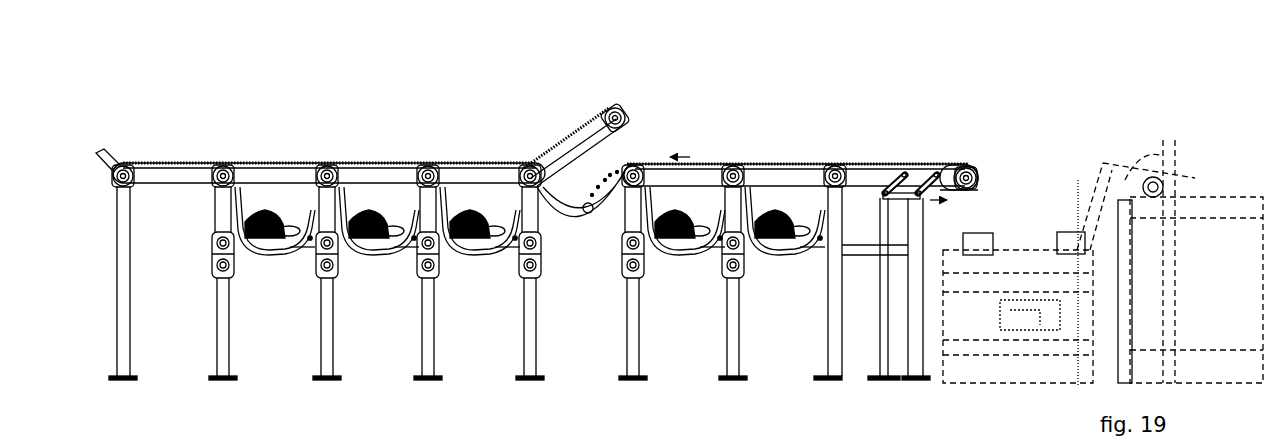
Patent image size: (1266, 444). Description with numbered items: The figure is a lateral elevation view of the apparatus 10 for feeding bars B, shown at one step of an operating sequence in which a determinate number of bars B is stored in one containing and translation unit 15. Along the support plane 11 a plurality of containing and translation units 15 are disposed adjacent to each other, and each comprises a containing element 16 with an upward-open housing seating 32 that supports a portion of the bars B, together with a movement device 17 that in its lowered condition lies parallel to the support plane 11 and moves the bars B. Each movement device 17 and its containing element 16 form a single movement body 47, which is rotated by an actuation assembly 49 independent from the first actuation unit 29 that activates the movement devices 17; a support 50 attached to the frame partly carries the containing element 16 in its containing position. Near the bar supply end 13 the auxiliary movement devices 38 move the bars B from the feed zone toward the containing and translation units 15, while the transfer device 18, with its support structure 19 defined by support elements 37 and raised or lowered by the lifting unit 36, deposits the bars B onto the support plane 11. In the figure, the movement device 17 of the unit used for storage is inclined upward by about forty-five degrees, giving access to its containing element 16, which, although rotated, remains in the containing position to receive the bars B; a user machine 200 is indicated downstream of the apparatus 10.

The apparatus 10 is at (973, 88).
The support plane 11 is at (238, 160).
The bar supply end 13 is at (985, 165).
The containing and translation unit 15 is at (259, 308).
The containing element 16 is at (247, 204).
The movement device 17 is at (281, 176).
The transfer device 18 is at (958, 163).
The support structure 19 is at (898, 166).
The first actuation unit 29 is at (212, 250).
The housing seating 32 is at (266, 238).
The lifting unit 36 is at (880, 198).
The support elements 37 is at (938, 166).
The auxiliary movement devices 38 is at (877, 160).
The movement body 47 is at (271, 162).
The actuation assembly 49 is at (214, 278).
The support 50 is at (308, 240).
The user machine 200 is at (1215, 153).
The bars B is at (298, 231).